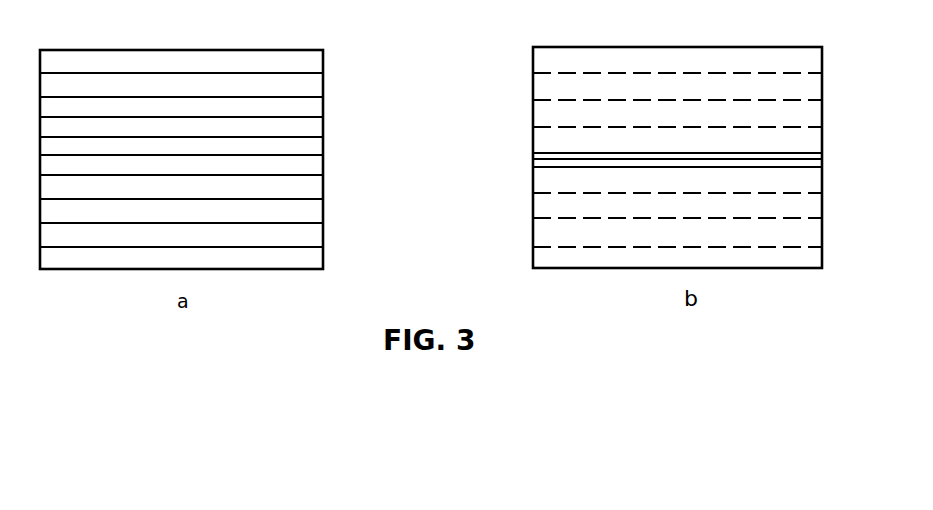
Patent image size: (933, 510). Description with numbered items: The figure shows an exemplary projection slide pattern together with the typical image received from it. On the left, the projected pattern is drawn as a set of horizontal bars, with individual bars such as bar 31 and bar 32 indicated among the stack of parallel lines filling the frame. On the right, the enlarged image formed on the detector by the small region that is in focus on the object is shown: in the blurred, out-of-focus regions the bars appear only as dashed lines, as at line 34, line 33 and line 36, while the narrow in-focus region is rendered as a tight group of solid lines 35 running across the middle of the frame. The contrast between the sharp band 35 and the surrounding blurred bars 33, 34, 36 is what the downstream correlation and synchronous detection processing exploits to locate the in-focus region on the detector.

The recording track (first pattern) 31 is at (308, 103).
The recording track (second pattern) 32 is at (305, 153).
The erased track 33 is at (808, 113).
The erased track 34 is at (808, 70).
The recorded track group 35 is at (808, 167).
The erased track 36 is at (808, 215).